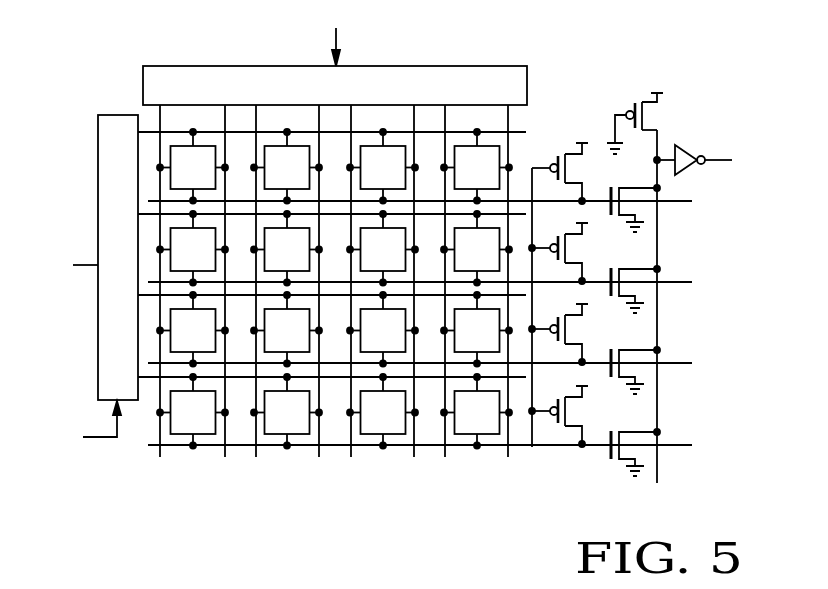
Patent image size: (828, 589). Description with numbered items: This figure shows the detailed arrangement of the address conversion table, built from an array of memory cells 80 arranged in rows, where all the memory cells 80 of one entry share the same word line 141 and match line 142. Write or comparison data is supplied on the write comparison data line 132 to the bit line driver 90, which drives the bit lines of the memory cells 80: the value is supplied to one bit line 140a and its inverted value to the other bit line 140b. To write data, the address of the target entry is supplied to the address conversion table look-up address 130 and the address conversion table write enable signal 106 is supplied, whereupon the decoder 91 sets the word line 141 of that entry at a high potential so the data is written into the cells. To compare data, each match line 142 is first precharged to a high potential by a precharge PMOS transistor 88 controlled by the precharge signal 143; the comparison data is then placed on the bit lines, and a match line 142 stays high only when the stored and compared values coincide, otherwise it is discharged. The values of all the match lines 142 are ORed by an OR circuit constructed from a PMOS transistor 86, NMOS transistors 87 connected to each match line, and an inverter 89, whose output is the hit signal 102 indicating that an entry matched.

The memory cell 80 is at (299, 433).
The PMOS transistor 86 is at (643, 123).
The NMOS transistor 87 is at (635, 452).
The precharge PMOS transistor 88 is at (566, 173).
The inverter 89 is at (686, 152).
The bit line driver 90 is at (527, 70).
The decoder 91 is at (113, 114).
The hit signal 102 is at (722, 154).
The address conversion table write enable signal 106 is at (83, 437).
The address conversion table look-up address 130 is at (78, 265).
The write comparison data line 132 is at (338, 32).
The bit line 140a is at (160, 448).
The bit line 140b is at (225, 448).
The word line 141 is at (526, 132).
The match line 142 is at (680, 202).
The precharge signal 143 is at (532, 450).